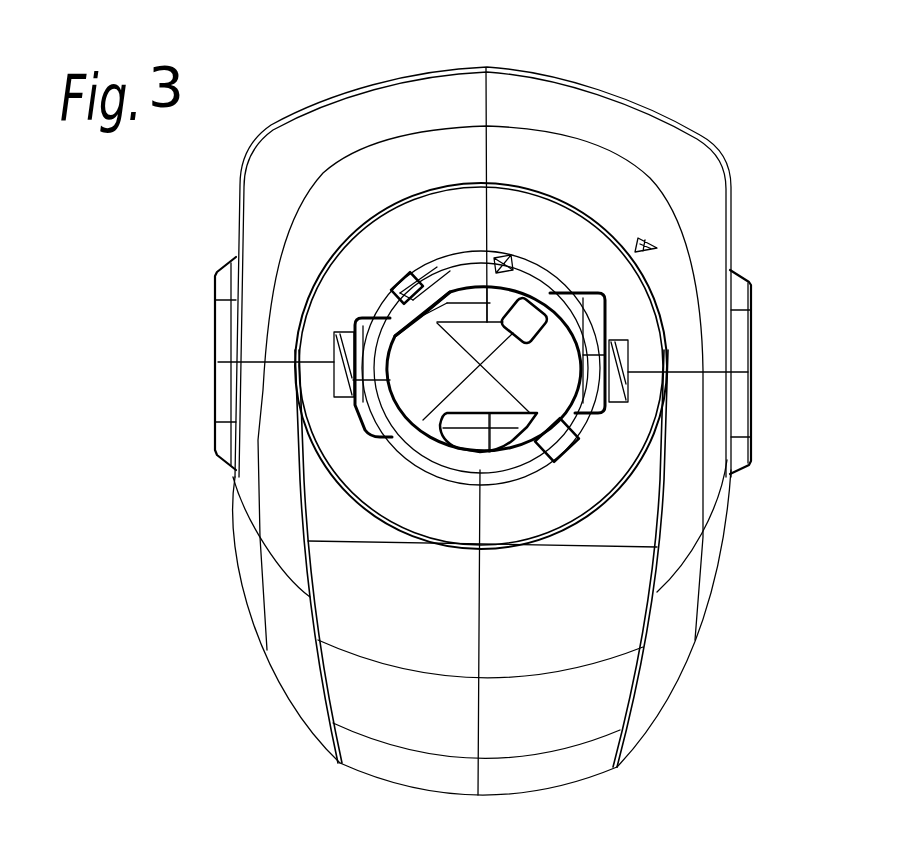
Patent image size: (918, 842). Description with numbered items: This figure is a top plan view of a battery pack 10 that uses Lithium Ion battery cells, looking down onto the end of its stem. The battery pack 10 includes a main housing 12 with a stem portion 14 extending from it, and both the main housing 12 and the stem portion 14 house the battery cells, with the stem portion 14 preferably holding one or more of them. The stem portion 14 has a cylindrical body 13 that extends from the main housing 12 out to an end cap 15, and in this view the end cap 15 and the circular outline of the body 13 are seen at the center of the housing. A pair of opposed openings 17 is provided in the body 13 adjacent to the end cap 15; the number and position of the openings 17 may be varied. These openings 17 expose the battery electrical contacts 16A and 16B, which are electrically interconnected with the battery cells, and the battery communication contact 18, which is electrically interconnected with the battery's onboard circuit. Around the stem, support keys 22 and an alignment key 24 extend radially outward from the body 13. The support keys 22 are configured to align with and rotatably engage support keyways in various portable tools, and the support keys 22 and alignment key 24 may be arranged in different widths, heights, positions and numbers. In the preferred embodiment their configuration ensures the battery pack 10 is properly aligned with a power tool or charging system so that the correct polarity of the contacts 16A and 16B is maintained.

The battery pack 10 is at (731, 95).
The main housing 12 is at (712, 212).
The cylindrical body 13 is at (468, 440).
The stem portion 14 is at (513, 470).
The end cap 15 is at (413, 357).
The battery electrical contact 16A is at (463, 440).
The battery electrical contact 16B is at (470, 283).
The openings 17 is at (442, 272).
The battery communication contact 18 is at (529, 309).
The support keys 22 is at (410, 280).
The alignment keys 24 is at (499, 257).